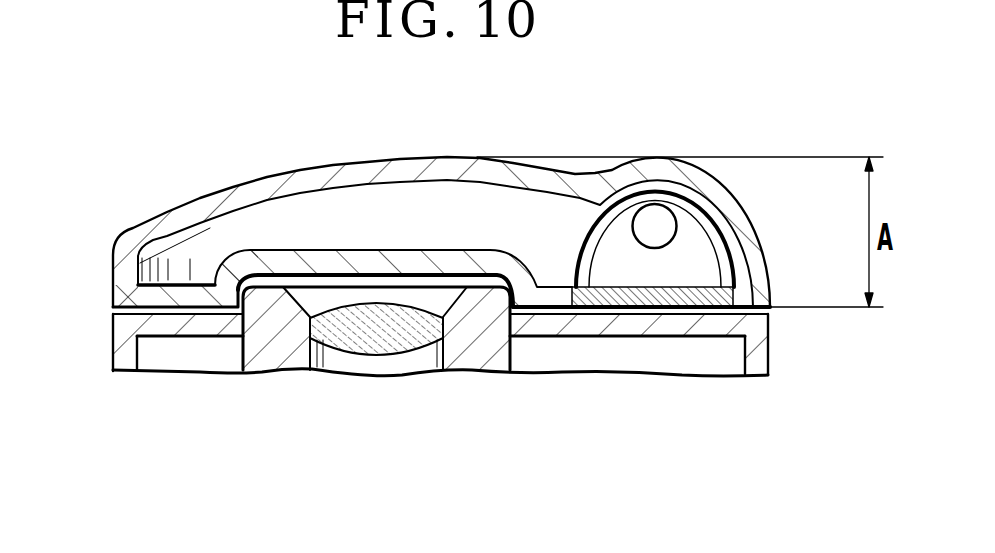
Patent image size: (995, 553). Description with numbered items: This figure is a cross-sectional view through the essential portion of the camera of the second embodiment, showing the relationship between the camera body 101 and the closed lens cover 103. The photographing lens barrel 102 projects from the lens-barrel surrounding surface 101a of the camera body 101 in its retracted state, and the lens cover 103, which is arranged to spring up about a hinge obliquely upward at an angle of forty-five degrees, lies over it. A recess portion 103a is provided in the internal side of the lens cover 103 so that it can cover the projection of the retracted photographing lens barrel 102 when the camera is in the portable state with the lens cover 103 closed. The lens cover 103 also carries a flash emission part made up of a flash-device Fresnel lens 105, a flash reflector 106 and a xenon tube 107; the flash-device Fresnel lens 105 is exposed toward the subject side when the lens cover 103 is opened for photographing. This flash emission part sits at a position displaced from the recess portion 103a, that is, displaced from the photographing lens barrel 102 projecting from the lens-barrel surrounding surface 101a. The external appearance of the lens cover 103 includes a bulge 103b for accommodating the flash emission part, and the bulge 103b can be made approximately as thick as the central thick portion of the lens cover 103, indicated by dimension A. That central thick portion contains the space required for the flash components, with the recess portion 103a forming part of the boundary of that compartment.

The camera body 101 is at (118, 355).
The lens-barrel surrounding surface 101a is at (118, 320).
The photographing lens barrel 102 is at (503, 403).
The lens cover 103 is at (270, 190).
The recess portion 103a is at (376, 257).
The bulge 103b is at (703, 181).
The flash-device Fresnel lens 105 is at (702, 310).
The flash reflector 106 is at (590, 235).
The xenon tube 107 is at (653, 214).